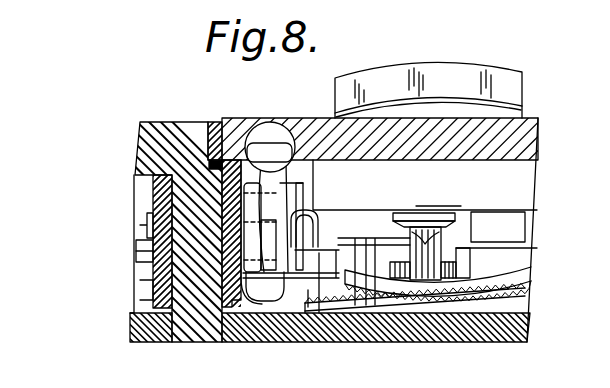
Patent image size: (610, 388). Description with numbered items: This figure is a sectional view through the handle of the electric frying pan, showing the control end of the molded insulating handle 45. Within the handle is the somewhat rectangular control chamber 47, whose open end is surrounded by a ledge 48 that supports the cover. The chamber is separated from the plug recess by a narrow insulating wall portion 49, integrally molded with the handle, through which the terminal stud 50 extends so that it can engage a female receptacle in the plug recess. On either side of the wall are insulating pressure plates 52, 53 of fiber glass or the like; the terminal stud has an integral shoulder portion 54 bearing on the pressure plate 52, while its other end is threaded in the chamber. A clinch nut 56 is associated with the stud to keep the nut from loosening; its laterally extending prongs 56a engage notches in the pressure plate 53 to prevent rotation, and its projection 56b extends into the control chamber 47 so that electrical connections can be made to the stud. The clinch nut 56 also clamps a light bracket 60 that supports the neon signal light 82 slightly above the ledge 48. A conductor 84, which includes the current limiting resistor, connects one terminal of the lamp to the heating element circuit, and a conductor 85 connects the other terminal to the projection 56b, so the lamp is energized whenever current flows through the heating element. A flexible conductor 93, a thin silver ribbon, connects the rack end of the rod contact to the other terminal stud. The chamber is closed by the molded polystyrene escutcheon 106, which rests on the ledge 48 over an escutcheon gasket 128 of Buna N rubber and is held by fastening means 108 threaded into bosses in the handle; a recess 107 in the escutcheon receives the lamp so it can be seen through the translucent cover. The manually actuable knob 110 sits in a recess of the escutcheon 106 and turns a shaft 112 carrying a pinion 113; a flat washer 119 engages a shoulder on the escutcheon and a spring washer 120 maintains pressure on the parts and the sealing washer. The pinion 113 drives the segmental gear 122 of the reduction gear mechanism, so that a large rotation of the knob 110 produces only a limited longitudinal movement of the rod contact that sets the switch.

The handle 45 is at (492, 334).
The control chamber 47 is at (276, 305).
The ledge 48 is at (209, 164).
The insulating wall portion 49 is at (198, 288).
The terminal stud 50 is at (140, 248).
The insulating pressure plate 52 is at (158, 294).
The insulating pressure plate 53 is at (227, 308).
The shoulder portion 54 is at (147, 225).
The clinch nut 56 is at (277, 242).
The prong 56a is at (195, 227).
The projection 56b is at (322, 305).
The light bracket 60 is at (298, 183).
The signal light 82 is at (277, 130).
The conductor 84 is at (298, 133).
The conductor 85 is at (281, 202).
The flexible conductor 93 is at (318, 232).
The escutcheon 106 is at (538, 128).
The recess 107 is at (262, 132).
The fastening means 108 is at (382, 226).
The knob 110 is at (500, 73).
The shaft 112 is at (441, 292).
The pinion 113 is at (438, 255).
The flat washer 119 is at (421, 210).
The spring washer 120 is at (445, 209).
The segmental gear 122 is at (531, 268).
The escutcheon gasket 128 is at (208, 122).